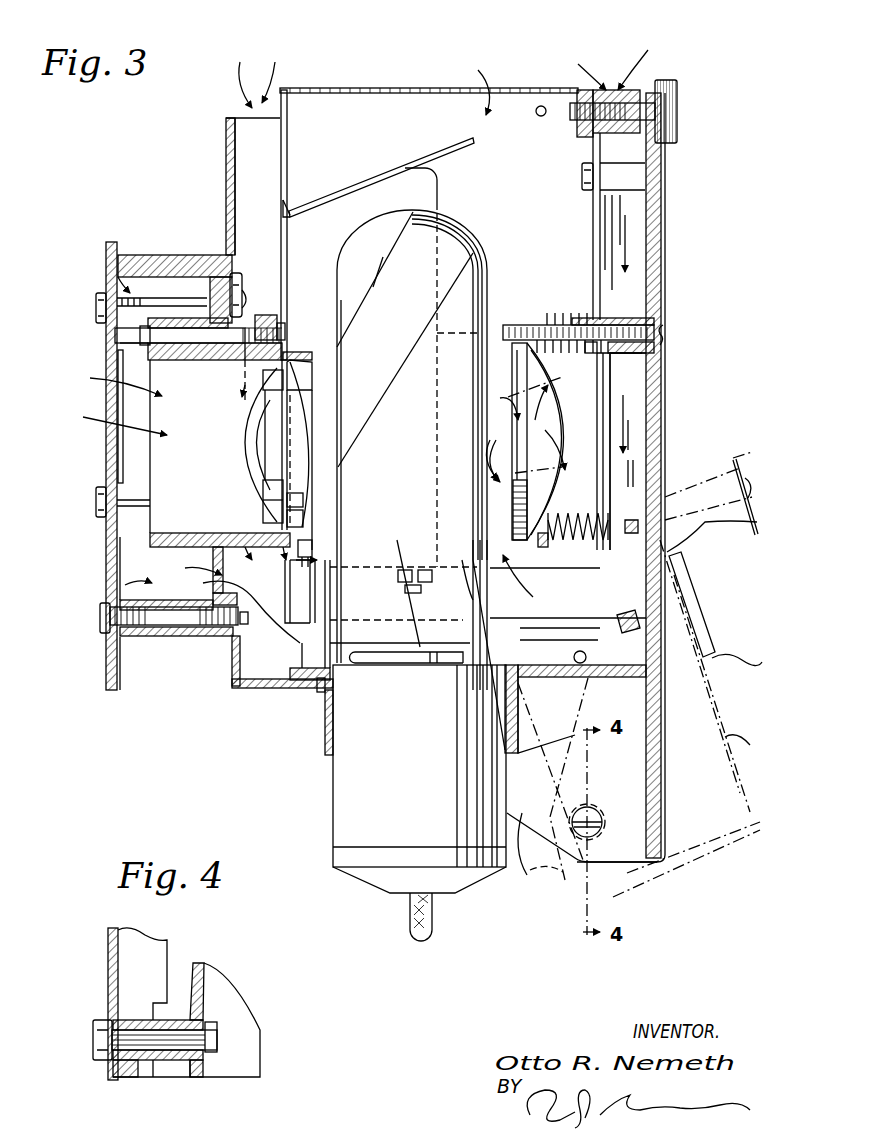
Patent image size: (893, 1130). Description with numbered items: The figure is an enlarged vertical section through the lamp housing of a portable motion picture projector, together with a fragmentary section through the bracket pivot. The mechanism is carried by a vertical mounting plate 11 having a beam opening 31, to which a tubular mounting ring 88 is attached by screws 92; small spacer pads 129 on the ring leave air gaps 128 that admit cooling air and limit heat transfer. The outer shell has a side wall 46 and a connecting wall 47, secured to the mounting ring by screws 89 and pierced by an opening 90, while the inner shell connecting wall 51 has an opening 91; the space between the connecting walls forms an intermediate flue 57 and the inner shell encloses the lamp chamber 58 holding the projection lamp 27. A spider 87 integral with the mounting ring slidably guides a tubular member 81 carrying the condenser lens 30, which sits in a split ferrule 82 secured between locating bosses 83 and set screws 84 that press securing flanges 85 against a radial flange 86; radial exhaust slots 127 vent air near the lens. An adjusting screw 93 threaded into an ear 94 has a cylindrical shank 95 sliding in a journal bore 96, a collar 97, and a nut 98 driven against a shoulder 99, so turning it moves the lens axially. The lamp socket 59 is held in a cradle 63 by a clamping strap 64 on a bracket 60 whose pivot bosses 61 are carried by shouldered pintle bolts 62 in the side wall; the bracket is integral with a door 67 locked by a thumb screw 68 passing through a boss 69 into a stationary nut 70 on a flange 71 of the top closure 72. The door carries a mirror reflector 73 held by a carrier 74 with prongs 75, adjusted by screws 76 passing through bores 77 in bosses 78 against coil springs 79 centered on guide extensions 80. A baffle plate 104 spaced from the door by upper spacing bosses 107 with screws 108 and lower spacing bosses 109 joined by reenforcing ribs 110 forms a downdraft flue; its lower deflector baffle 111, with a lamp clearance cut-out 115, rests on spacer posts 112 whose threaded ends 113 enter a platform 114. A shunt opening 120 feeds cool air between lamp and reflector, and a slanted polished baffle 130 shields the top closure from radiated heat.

In FIG. 3, the vertical mounting plate 11 is at (102, 250).
In FIG. 3, the projection lamp 27 is at (467, 233).
In FIG. 3, the condenser collector lens 30 is at (320, 430).
In FIG. 3, the opening in the mounting plate 31 is at (110, 542).
In FIG. 4, the outer shell side wall 46 is at (108, 968).
In FIG. 3, the connecting wall 47 is at (226, 165).
In FIG. 3, the connecting wall of inner shell 51 is at (287, 240).
In FIG. 3, the intermediate flue 57 is at (242, 127).
In FIG. 3, the lamp chamber 58 is at (472, 85).
In FIG. 3, the lamp socket 59 is at (345, 813).
In FIG. 3, the bracket 60 is at (582, 854).
In FIG. 4, the bracket 60 is at (197, 973).
In FIG. 4, the pivot bosses 61 is at (130, 1060).
In FIG. 3, the shouldered pintle bolts 62 is at (592, 812).
In FIG. 4, the shouldered pintle bolts 62 is at (187, 1045).
In FIG. 3, the cradle 63 is at (518, 700).
In FIG. 3, the clamping strap 64 is at (325, 740).
In FIG. 3, the door 67 is at (665, 400).
In FIG. 3, the thumb screw 68 is at (678, 110).
In FIG. 3, the boss 69 is at (653, 72).
In FIG. 3, the stationary nut 70 is at (578, 125).
In FIG. 3, the flange 71 is at (590, 145).
In FIG. 3, the top closure 72 is at (430, 88).
In FIG. 3, the mirror reflector 73 is at (548, 436).
In FIG. 3, the carrier 74 is at (540, 323).
In FIG. 3, the prongs 75 is at (509, 343).
In FIG. 3, the screws 76 is at (665, 335).
In FIG. 3, the bores 77 is at (654, 345).
In FIG. 3, the bosses 78 is at (625, 318).
In FIG. 3, the coil springs 79 is at (548, 325).
In FIG. 3, the guide extensions 80 is at (594, 353).
In FIG. 3, the tubular member 81 is at (192, 360).
In FIG. 3, the split ferrule 82 is at (315, 372).
In FIG. 3, the locating bosses 83 is at (305, 497).
In FIG. 3, the set screws 84 is at (314, 548).
In FIG. 3, the securing flanges 85 is at (305, 520).
In FIG. 3, the radial flange 86 is at (262, 503).
In FIG. 3, the spider 87 is at (213, 565).
In FIG. 3, the tubular mounting ring 88 is at (183, 637).
In FIG. 3, the screws 89 is at (242, 628).
In FIG. 3, the opening 90 is at (240, 293).
In FIG. 3, the opening 91 is at (290, 313).
In FIG. 3, the screws 92 is at (100, 614).
In FIG. 3, the adjusting screw 93 is at (112, 336).
In FIG. 3, the radial lug or ear 94 is at (268, 310).
In FIG. 3, the cylindrical shank 95 is at (188, 316).
In FIG. 3, the journal bore 96 is at (162, 316).
In FIG. 3, the collar 97 is at (118, 352).
In FIG. 3, the nut 98 is at (243, 380).
In FIG. 3, the shoulder 99 is at (242, 355).
In FIG. 3, the baffle plate 104 is at (424, 193).
In FIG. 3, the upper spacing bosses 107 is at (627, 172).
In FIG. 3, the screws 108 is at (582, 180).
In FIG. 3, the lower spacing bosses 109 is at (615, 622).
In FIG. 3, the reenforcing ribs 110 is at (633, 368).
In FIG. 3, the deflector baffle 111 is at (577, 553).
In FIG. 3, the spacer posts 112 is at (345, 598).
In FIG. 3, the screw threaded ends 113 is at (318, 690).
In FIG. 3, the platform 114 is at (290, 672).
In FIG. 3, the lamp clearance cut-out 115 is at (580, 590).
In FIG. 3, the shunt opening 120 is at (503, 463).
In FIG. 3, the radial exhaust slots 127 is at (268, 490).
In FIG. 3, the gaps 128 is at (118, 460).
In FIG. 3, the spacer pads 129 is at (125, 637).
In FIG. 3, the baffle 130 is at (460, 140).